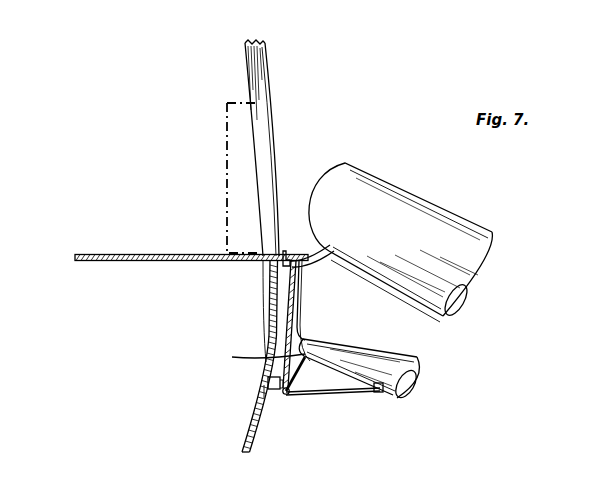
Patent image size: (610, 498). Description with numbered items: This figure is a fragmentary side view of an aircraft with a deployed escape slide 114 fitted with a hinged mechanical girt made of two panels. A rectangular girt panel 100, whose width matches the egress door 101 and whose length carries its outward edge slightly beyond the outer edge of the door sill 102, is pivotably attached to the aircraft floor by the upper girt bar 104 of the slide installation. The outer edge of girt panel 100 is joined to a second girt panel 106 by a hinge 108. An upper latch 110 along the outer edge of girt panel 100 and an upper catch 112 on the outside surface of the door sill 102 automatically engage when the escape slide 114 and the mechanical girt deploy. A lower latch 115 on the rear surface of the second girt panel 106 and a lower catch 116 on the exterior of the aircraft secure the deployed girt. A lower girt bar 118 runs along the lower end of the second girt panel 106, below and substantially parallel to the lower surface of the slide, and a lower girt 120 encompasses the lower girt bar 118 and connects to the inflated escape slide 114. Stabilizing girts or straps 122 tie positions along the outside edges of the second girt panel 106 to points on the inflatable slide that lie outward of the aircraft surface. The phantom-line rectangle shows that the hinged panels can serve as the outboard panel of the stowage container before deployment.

The girt panel 100 is at (290, 257).
The egress door 101 is at (268, 78).
The door sill 102 is at (270, 276).
The upper girt bar 104 is at (262, 264).
The second girt panel 106 is at (301, 318).
The hinge 108 is at (325, 250).
The upper latch 110 is at (300, 264).
The upper catch 112 is at (298, 282).
The escape slide 114 is at (401, 242).
The lower latch 115 is at (288, 396).
The lower catch 116 is at (264, 398).
The lower girt bar 118 is at (304, 387).
The lower girt 120 is at (249, 357).
The stabilizing girts or straps 122 is at (355, 390).